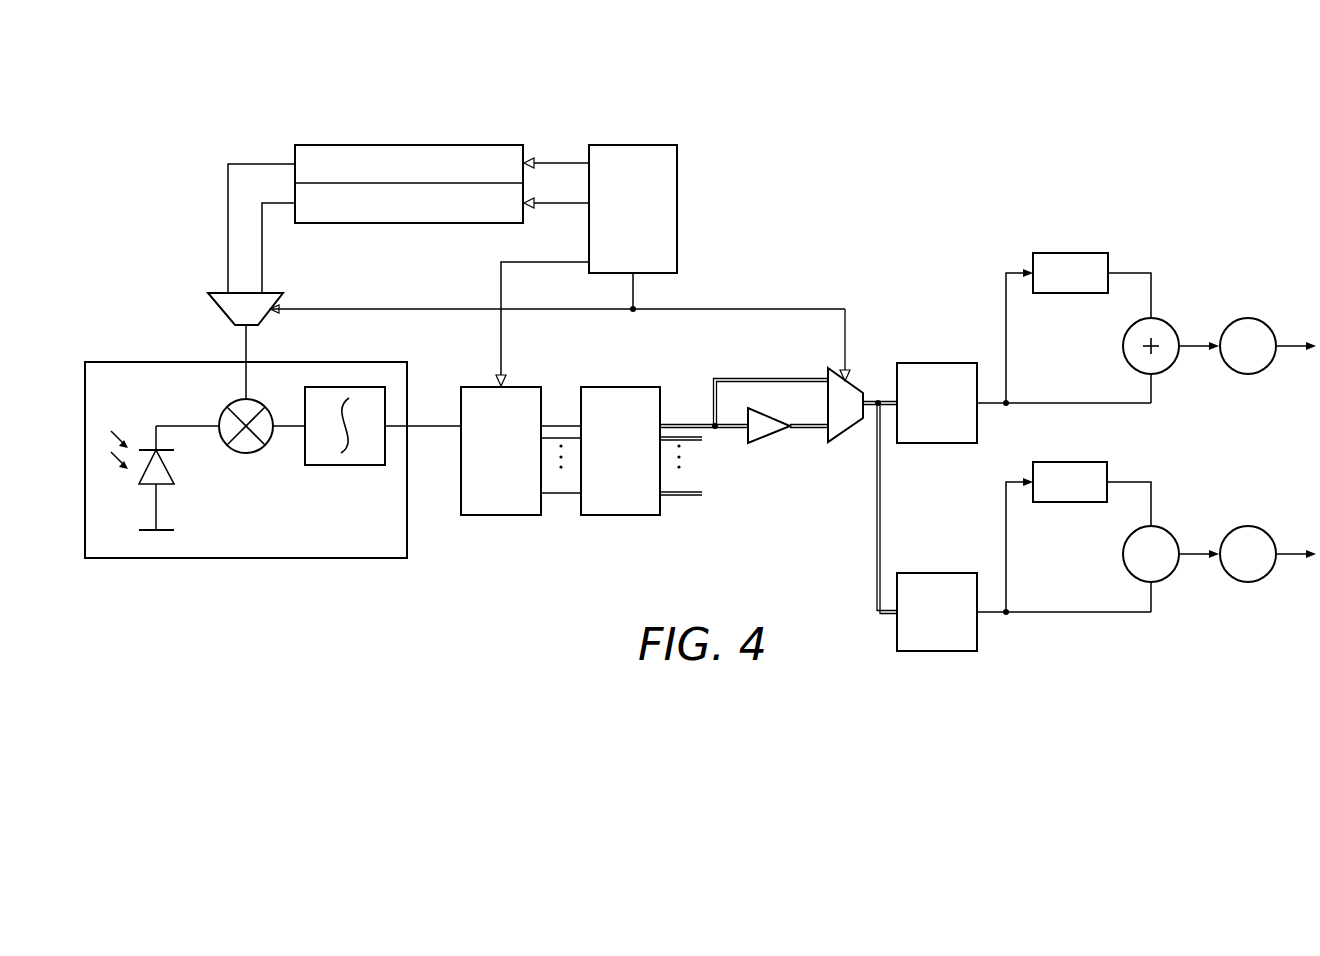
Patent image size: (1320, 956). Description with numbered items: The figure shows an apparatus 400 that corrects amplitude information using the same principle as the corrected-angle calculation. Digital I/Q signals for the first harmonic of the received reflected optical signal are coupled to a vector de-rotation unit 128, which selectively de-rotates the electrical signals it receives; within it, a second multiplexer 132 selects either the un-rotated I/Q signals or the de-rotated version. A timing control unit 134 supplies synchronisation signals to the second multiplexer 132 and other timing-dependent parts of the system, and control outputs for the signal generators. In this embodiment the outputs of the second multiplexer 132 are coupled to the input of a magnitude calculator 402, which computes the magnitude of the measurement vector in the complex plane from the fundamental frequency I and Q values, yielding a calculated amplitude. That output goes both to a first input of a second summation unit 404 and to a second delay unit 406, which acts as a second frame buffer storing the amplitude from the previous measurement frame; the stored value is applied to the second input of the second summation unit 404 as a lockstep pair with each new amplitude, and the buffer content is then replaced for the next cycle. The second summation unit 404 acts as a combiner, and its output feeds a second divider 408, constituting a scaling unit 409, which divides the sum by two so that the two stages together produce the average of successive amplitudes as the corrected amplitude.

The apparatus 400 is at (163, 125).
The timing control unit 134 is at (653, 220).
The vector de-rotation unit 128 is at (783, 478).
The second multiplexer 132 is at (847, 432).
The magnitude calculator 402 is at (958, 624).
The second delay unit 406 is at (1091, 494).
The second summation unit 404 is at (1172, 532).
The second divider 408 is at (1248, 583).
The scaling unit 409 is at (1248, 554).